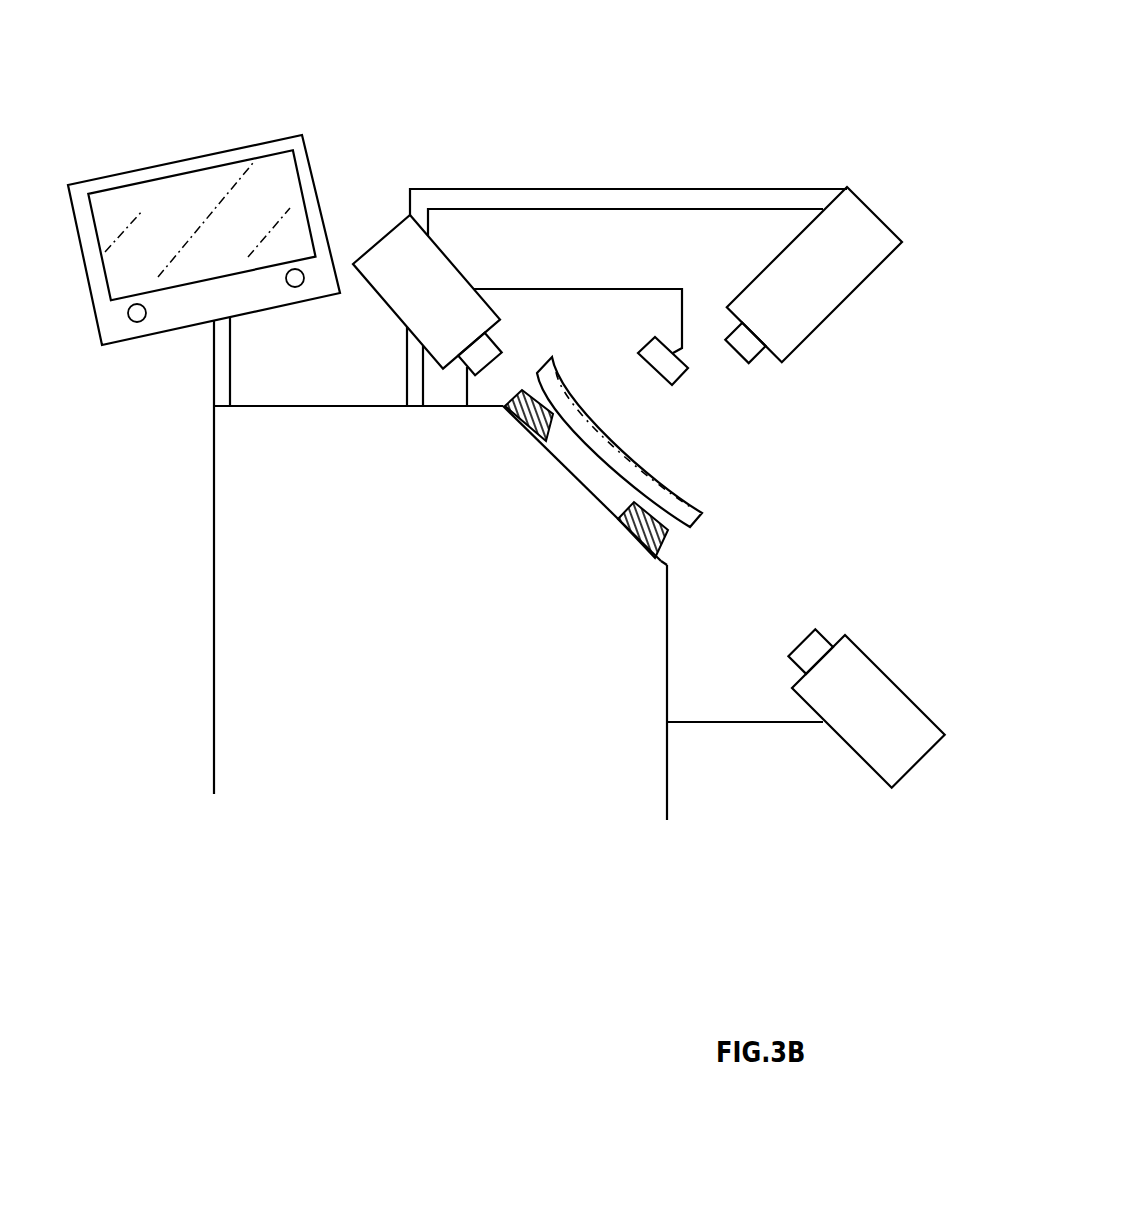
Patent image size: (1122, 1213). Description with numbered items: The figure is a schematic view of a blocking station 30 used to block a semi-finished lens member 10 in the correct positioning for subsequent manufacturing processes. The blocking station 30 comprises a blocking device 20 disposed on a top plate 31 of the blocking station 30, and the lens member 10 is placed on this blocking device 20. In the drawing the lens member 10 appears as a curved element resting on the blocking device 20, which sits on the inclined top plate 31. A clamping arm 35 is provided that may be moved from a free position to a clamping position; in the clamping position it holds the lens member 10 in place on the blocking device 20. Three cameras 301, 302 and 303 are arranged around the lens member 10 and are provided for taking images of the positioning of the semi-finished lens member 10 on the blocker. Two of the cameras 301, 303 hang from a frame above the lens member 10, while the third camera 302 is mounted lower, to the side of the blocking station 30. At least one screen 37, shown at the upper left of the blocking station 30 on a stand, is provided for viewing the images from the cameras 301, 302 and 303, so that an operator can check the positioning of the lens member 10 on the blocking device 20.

The lens member 10 is at (680, 473).
The blocking device 20 is at (667, 538).
The blocking station 30 is at (458, 152).
The top plate 31 is at (642, 521).
The clamping arm 35 is at (592, 288).
The screen 37 is at (155, 212).
The camera 301 is at (822, 288).
The camera 302 is at (888, 755).
The camera 303 is at (402, 258).